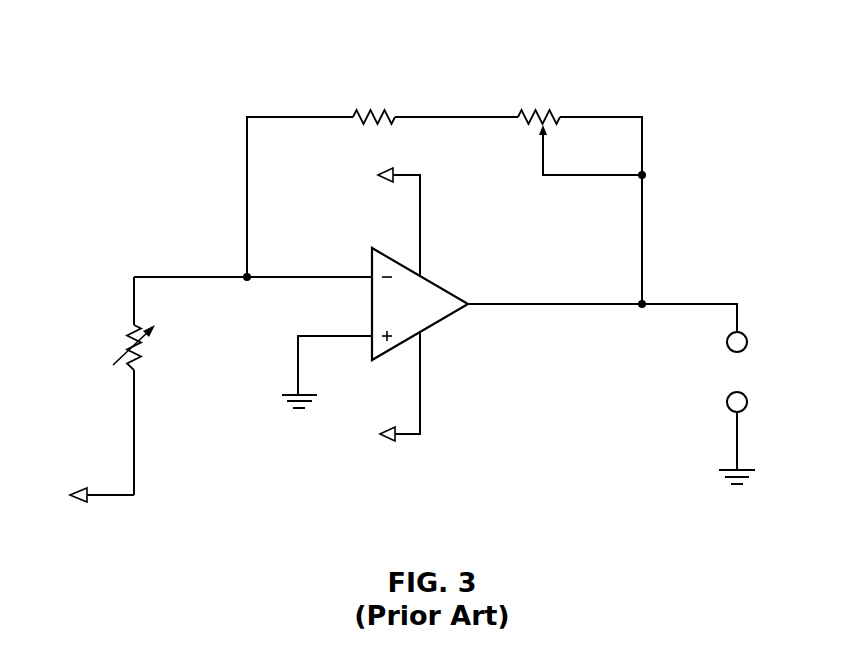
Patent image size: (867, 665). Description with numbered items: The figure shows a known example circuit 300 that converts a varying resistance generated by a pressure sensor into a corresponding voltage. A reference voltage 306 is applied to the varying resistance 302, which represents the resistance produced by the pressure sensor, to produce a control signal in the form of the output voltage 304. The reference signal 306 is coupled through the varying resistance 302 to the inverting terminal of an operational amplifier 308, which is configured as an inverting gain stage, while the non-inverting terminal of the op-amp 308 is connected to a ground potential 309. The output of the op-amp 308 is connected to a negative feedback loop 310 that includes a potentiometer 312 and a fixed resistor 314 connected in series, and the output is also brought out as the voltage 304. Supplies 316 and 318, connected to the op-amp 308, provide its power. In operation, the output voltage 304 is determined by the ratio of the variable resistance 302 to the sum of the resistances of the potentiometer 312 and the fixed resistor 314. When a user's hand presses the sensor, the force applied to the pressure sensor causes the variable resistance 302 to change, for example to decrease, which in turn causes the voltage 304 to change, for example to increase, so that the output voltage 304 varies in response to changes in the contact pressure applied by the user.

The circuit 300 is at (133, 88).
The varying resistance 302 is at (125, 330).
The voltage 304 is at (767, 360).
The reference voltage 306 is at (76, 486).
The operational amplifier 308 is at (437, 323).
The ground potential 309 is at (291, 393).
The negative feedback loop 310 is at (457, 72).
The potentiometer 312 is at (549, 111).
The fixed resistor 314 is at (371, 111).
The supply 316 is at (386, 170).
The supply 318 is at (388, 444).